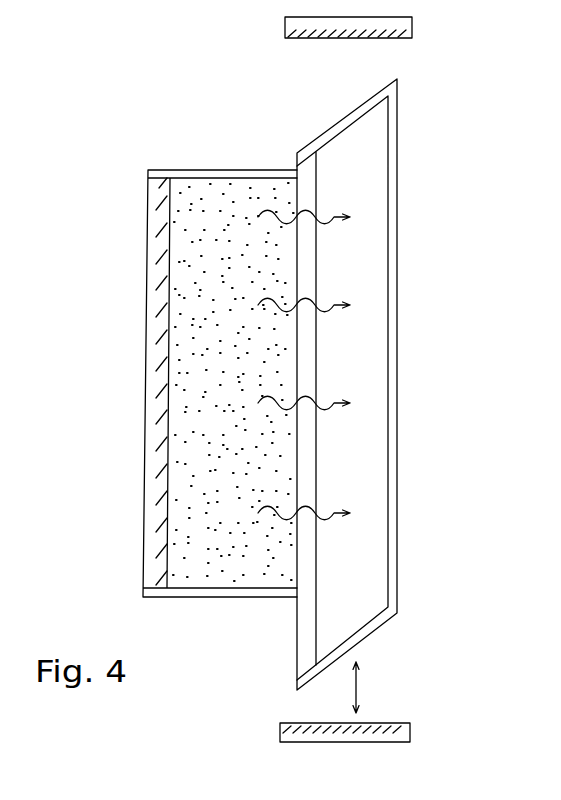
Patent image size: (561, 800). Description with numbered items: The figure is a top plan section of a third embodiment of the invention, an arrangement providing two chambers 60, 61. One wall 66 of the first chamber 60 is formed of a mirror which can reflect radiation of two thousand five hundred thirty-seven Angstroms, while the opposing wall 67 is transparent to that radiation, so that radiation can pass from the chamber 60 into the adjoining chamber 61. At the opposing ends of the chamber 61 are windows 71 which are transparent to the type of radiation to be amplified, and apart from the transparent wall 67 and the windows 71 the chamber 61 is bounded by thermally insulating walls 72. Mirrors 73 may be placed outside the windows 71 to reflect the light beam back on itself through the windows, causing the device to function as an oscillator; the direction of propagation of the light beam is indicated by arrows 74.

The chamber 60 is at (250, 370).
The chamber 61 is at (356, 372).
The wall 66 is at (157, 500).
The opposing wall 67 is at (328, 471).
The windows 71 is at (315, 126).
The thermally insulating walls 72 is at (312, 161).
The mirrors 73 is at (276, 28).
The arrows 74 is at (370, 689).